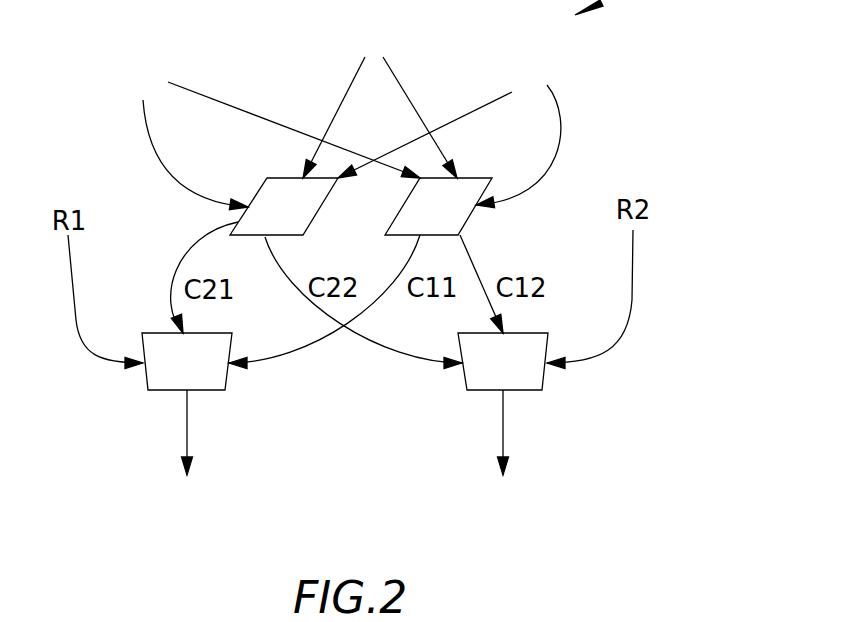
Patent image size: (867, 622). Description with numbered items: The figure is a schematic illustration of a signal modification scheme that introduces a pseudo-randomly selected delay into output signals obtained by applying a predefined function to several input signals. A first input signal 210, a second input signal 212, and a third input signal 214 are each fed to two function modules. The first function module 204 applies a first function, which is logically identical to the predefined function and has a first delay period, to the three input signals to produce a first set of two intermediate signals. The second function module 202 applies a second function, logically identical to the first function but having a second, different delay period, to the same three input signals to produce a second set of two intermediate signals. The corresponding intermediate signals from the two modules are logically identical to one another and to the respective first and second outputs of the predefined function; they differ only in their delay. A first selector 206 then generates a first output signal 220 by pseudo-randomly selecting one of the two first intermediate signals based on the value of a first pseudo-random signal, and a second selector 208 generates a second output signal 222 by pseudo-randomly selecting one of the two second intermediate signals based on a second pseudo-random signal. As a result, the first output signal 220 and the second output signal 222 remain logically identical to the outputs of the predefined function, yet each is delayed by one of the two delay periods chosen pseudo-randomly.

The second function module 202 is at (320, 207).
The first function module 204 is at (467, 218).
The first selector 206 is at (223, 390).
The second selector 208 is at (540, 392).
The first input signal 210 is at (213, 99).
The second input signal 212 is at (352, 88).
The third input signal 214 is at (553, 108).
The first output signal 220 is at (188, 430).
The second output signal 222 is at (503, 430).